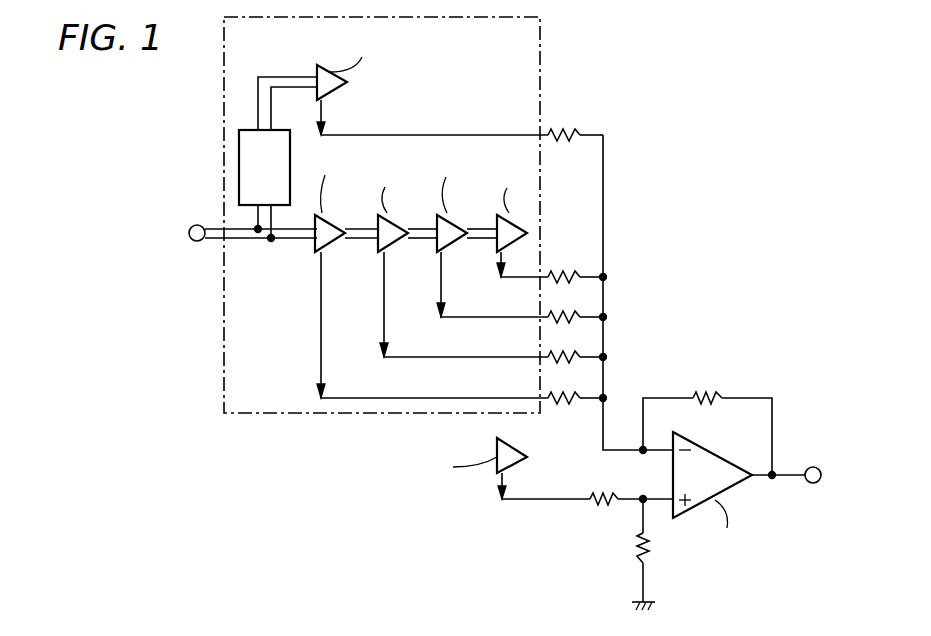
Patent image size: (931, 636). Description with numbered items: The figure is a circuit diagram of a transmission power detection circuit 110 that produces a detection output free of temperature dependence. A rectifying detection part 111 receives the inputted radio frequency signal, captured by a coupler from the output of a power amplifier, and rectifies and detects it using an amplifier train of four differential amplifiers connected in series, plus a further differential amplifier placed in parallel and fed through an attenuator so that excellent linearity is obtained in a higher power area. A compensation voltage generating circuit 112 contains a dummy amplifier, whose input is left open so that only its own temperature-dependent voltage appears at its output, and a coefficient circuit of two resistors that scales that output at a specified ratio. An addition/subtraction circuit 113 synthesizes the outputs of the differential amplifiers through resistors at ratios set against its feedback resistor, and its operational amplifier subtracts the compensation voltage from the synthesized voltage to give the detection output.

The transmission power detection circuit 110 is at (710, 140).
The rectifying detection part 111 is at (540, 35).
The compensation voltage generating circuit 112 is at (525, 562).
The addition/subtraction circuit 113 is at (743, 352).